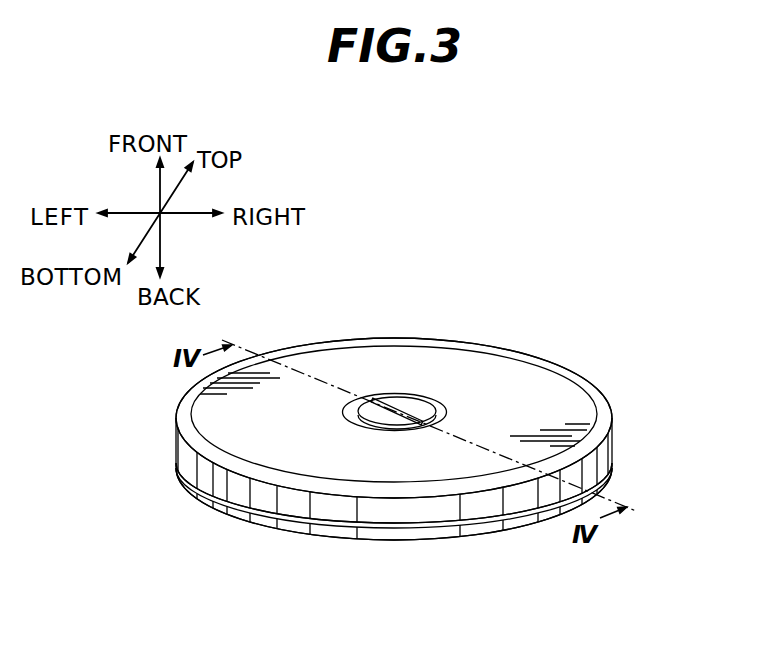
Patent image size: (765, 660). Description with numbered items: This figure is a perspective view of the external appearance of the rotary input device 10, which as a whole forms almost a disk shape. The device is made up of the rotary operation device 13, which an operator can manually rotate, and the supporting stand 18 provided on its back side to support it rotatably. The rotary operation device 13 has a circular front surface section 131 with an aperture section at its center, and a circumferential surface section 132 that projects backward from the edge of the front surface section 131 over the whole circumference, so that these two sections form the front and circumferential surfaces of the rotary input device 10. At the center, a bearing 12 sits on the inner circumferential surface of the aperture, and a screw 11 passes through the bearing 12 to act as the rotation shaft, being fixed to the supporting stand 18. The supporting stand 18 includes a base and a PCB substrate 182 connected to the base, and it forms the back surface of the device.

The rotary input device 10 is at (511, 272).
The screw 11 is at (397, 403).
The bearing 12 is at (433, 415).
The rotary operation device 13 is at (518, 352).
The front surface section 131 is at (555, 387).
The circumferential surface section 132 is at (602, 453).
The supporting stand 18 is at (453, 533).
The PCB substrate 182 is at (453, 533).